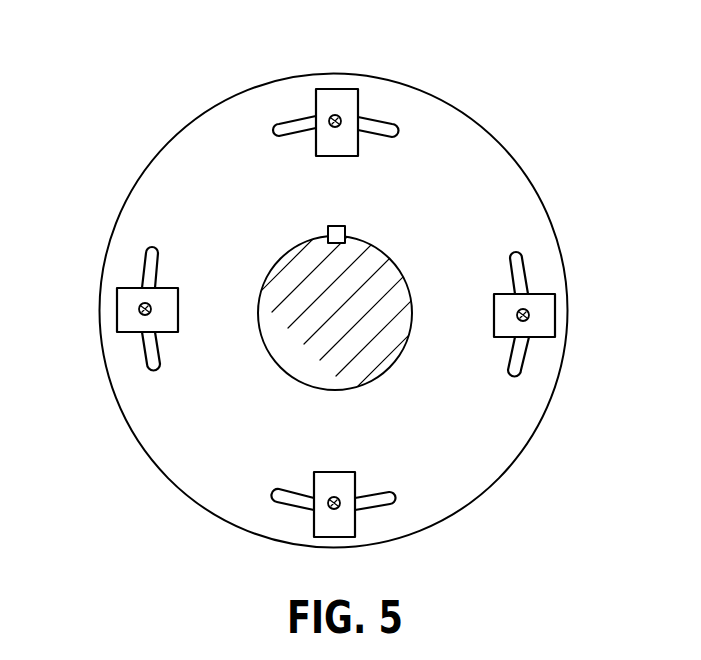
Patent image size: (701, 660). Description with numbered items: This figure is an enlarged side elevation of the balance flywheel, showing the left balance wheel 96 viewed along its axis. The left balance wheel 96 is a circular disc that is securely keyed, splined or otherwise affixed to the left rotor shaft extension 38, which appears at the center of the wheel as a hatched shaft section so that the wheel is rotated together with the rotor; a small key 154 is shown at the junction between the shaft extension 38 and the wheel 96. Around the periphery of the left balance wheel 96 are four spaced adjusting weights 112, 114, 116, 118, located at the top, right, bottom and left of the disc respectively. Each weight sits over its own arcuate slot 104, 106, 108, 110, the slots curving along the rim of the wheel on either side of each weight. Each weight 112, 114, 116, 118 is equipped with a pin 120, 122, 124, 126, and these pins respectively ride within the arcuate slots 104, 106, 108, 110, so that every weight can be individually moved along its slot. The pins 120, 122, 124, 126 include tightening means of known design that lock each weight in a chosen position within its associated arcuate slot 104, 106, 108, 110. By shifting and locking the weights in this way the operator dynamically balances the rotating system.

The left balance wheel 96 is at (465, 509).
The left rotor shaft extension 38 is at (385, 267).
The key 154 is at (345, 229).
The arcuate slot 104 is at (383, 122).
The arcuate slot 106 is at (527, 267).
The arcuate slot 108 is at (385, 504).
The arcuate slot 110 is at (142, 350).
The adjusting weight 112 is at (353, 102).
The adjusting weight 114 is at (553, 315).
The adjusting weight 116 is at (317, 525).
The adjusting weight 118 is at (120, 305).
The pin 120 is at (332, 117).
The pin 122 is at (528, 318).
The pin 124 is at (333, 496).
The pin 126 is at (151, 308).